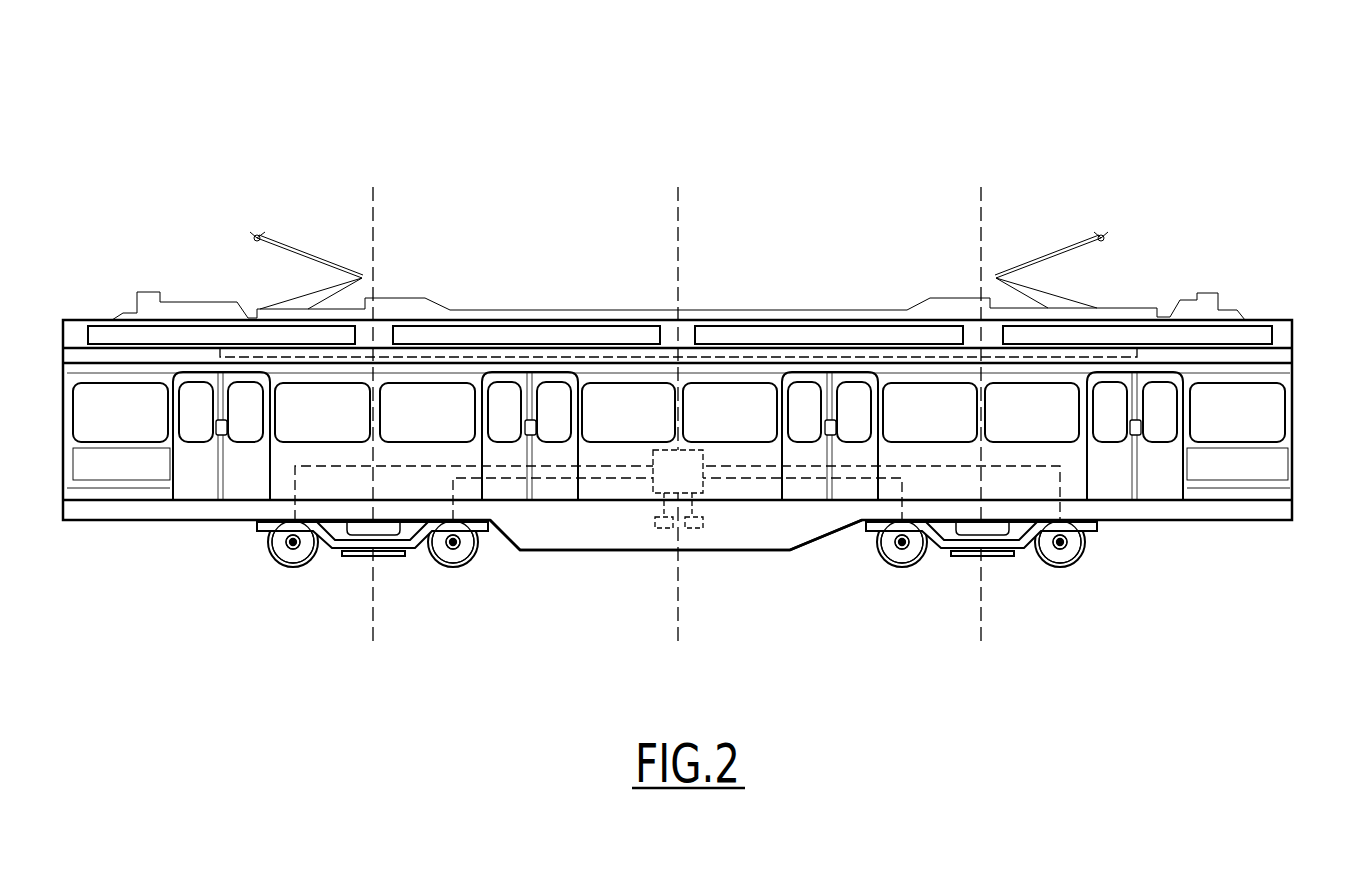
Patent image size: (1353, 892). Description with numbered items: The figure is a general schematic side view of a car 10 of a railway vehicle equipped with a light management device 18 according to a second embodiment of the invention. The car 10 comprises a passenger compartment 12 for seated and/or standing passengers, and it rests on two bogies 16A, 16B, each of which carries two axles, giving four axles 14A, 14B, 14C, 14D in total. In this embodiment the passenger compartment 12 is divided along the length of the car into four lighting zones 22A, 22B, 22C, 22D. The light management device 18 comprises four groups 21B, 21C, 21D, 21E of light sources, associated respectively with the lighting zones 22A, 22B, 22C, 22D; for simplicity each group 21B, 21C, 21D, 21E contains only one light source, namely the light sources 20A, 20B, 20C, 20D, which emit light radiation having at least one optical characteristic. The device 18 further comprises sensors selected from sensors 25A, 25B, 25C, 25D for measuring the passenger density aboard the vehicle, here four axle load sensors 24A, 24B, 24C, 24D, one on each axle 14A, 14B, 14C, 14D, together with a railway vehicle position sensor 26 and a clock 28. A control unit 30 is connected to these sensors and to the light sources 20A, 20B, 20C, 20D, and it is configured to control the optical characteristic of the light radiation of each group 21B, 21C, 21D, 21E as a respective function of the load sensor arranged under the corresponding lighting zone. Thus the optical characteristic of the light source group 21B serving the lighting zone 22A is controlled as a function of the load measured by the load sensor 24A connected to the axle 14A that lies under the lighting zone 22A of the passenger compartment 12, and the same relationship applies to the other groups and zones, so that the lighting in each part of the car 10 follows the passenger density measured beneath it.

The car 10 is at (1303, 220).
The passenger compartment 12 is at (763, 490).
The axle 14A is at (297, 546).
The axle 14B is at (457, 546).
The axle 14C is at (906, 546).
The axle 14D is at (1064, 546).
The bogie 16A is at (353, 544).
The bogie 16B is at (962, 544).
The light management device 18 is at (561, 585).
The light source 20A is at (197, 335).
The light source 20B is at (527, 335).
The light source 20C is at (832, 335).
The light source 20D is at (1150, 336).
The group of light sources 21B is at (246, 172).
The group of light sources 21C is at (497, 172).
The group of light sources 21D is at (789, 172).
The group of light sources 21E is at (1127, 172).
The lighting zone 22A is at (100, 492).
The lighting zone 22B is at (607, 490).
The lighting zone 22C is at (747, 490).
The lighting zone 22D is at (1240, 492).
The axle load sensor 24A is at (283, 564).
The axle load sensor 24B is at (443, 564).
The axle load sensor 24C is at (892, 564).
The axle load sensor 24D is at (1050, 564).
The sensor for measuring passenger density 25A is at (290, 541).
The sensor for measuring passenger density 25B is at (460, 541).
The sensor for measuring passenger density 25C is at (899, 541).
The sensor for measuring passenger density 25D is at (1067, 540).
The vehicle position sensor 26 is at (663, 529).
The clock 28 is at (692, 529).
The control unit 30 is at (667, 450).